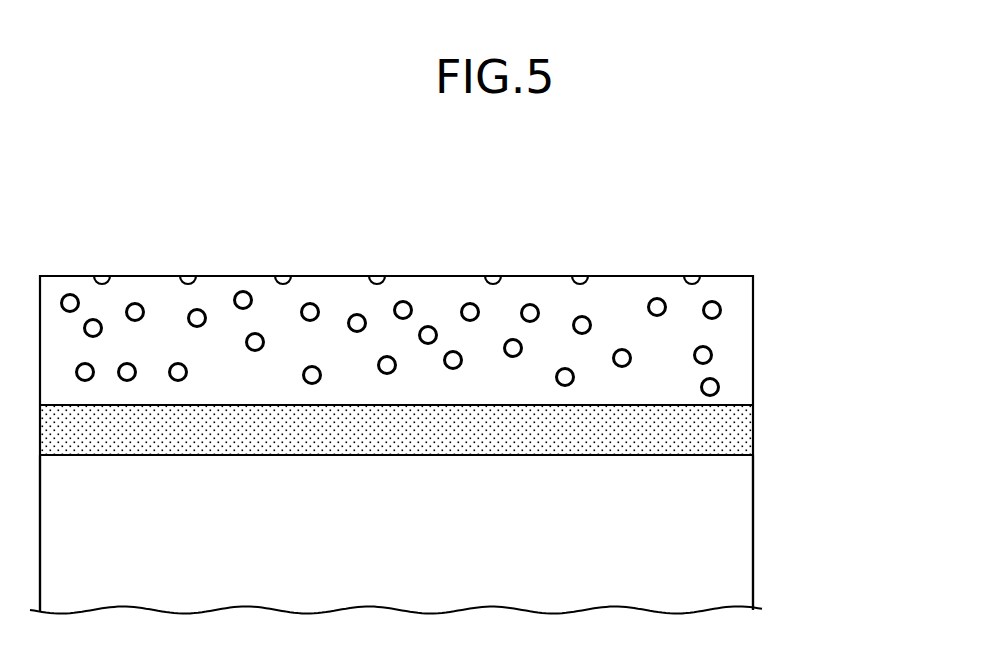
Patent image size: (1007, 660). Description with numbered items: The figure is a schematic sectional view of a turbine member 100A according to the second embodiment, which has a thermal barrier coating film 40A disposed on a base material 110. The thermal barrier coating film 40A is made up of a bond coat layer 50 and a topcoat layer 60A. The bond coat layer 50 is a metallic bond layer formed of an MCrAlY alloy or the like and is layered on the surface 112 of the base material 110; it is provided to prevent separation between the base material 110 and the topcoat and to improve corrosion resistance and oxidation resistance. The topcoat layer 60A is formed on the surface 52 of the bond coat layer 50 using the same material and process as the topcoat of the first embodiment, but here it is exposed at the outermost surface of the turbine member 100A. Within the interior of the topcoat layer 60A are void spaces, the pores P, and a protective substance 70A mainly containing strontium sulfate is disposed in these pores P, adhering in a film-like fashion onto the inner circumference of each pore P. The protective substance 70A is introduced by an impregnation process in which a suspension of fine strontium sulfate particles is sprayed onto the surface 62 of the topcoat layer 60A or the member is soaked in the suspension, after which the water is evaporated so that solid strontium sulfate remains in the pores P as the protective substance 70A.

The turbine member 100A is at (771, 196).
The thermal barrier coating film 40A is at (870, 327).
The surface of the topcoat layer 62 is at (437, 275).
The topcoat layer 60A is at (724, 364).
The protective substance 70A is at (688, 283).
The pores P is at (189, 272).
The surface of the bond coat layer 52 is at (740, 405).
The bond coat layer 50 is at (726, 428).
The surface of the base material 112 is at (744, 449).
The base material 110 is at (726, 533).